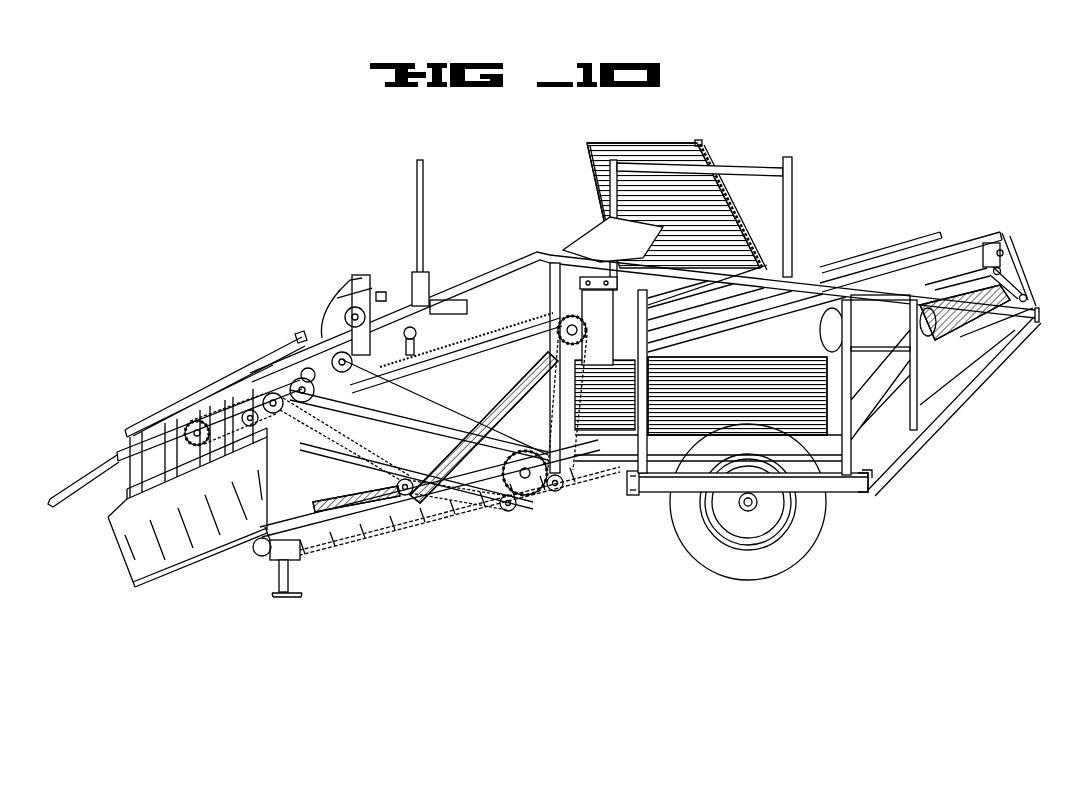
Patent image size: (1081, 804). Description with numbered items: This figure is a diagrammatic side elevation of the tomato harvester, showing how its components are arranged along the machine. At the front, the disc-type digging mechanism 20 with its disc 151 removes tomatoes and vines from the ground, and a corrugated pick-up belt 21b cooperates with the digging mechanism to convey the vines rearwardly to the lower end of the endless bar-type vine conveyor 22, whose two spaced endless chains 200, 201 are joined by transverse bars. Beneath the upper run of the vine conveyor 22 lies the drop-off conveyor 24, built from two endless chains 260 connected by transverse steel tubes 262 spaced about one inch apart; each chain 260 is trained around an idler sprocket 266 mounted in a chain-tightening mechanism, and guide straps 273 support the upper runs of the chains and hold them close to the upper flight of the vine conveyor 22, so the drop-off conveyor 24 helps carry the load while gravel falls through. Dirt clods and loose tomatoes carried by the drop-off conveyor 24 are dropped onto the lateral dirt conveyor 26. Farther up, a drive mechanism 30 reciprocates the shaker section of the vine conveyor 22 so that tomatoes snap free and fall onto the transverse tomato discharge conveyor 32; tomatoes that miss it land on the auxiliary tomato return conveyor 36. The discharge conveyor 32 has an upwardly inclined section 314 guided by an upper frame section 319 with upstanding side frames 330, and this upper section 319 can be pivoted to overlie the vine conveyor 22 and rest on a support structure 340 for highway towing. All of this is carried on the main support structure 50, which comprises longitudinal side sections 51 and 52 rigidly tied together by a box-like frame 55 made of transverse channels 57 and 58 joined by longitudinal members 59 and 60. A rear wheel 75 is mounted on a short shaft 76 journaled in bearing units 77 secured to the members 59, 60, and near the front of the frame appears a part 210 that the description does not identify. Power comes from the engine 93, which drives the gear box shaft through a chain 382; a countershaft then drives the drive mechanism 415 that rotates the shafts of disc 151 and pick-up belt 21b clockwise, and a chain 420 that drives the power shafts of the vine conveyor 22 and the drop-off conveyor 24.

The disc-type digging mechanism 20 is at (207, 568).
The pick-up belt 21b is at (138, 570).
The vine conveyor 22 is at (353, 551).
The drop-off conveyor 24 is at (473, 420).
The dirt conveyor 26 is at (597, 470).
The drive mechanism 30 is at (943, 323).
The tomato discharge conveyor 32 is at (680, 140).
The tomato return conveyor 36 is at (946, 262).
The main support structure 50 is at (803, 277).
The longitudinal side section 51 is at (450, 284).
The longitudinal side section 52 is at (500, 267).
The box-like frame 55 is at (856, 491).
The transversely extending channel 57 is at (633, 494).
The transversely extending channel 58 is at (868, 470).
The longitudinally extending member 59 is at (658, 468).
The longitudinally extending member 60 is at (817, 494).
The rear wheel 75 is at (703, 550).
The short shaft 76 is at (748, 507).
The bearing units 77 is at (740, 503).
The engine 93 is at (447, 323).
The disc 151 is at (193, 562).
The endless chain 200 is at (880, 385).
The endless chain 201 is at (948, 362).
The support leg 210 is at (267, 557).
The endless chains 260 is at (435, 482).
The transverse steel tubes 262 is at (393, 507).
The idler sprocket 266 is at (380, 502).
The guide straps 273 is at (480, 388).
The upwardly inclined section 314 is at (718, 155).
The upper frame section 319 is at (598, 160).
The side frames 330 is at (598, 182).
The support structure 340 is at (760, 170).
The chain 382 is at (340, 298).
The drive mechanism 415 is at (220, 410).
The chain 420 is at (376, 434).